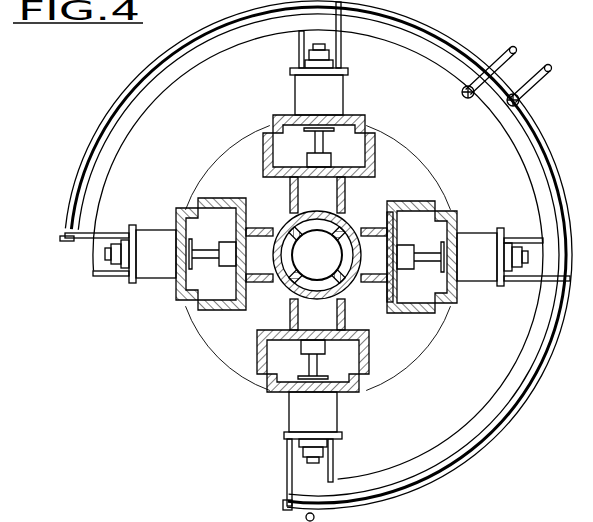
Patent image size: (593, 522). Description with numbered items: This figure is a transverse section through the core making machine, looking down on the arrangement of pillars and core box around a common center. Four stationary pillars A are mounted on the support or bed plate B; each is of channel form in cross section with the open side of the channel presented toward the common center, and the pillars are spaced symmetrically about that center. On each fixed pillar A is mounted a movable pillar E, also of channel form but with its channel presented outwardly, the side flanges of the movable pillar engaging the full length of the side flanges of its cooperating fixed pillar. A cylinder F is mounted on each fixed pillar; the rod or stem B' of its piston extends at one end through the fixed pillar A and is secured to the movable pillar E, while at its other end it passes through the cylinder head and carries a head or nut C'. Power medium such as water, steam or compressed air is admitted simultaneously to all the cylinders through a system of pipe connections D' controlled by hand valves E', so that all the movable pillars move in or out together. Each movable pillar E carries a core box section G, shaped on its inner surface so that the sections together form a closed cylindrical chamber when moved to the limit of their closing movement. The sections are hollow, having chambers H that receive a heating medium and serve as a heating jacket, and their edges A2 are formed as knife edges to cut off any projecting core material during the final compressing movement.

The stationary pillar A is at (270, 122).
The edges of the core box section A2 is at (317, 255).
The support or bed plate B is at (316, 258).
The rod or stem B' is at (316, 276).
The head or nut C' is at (303, 253).
The pipe connections D' is at (318, 255).
The movable pillar E is at (416, 225).
The hand valves E' is at (486, 86).
The cylinder F is at (316, 253).
The core box section G is at (334, 272).
The chambers H is at (322, 314).